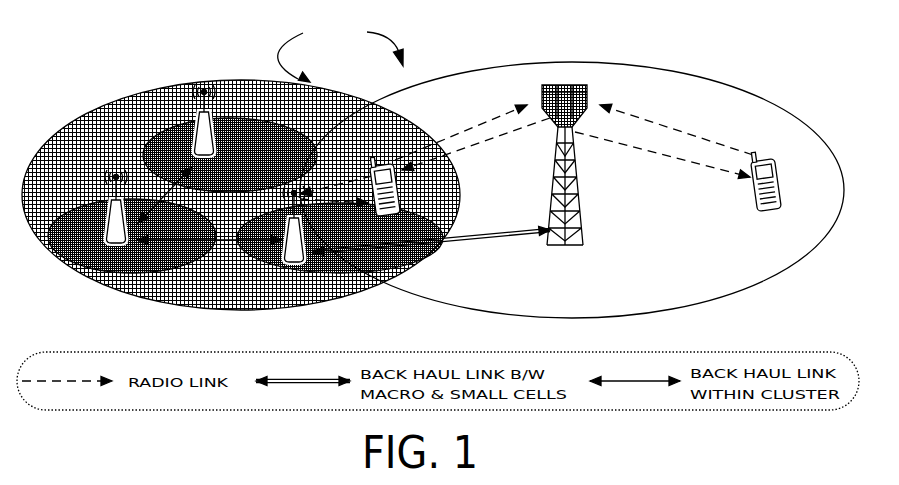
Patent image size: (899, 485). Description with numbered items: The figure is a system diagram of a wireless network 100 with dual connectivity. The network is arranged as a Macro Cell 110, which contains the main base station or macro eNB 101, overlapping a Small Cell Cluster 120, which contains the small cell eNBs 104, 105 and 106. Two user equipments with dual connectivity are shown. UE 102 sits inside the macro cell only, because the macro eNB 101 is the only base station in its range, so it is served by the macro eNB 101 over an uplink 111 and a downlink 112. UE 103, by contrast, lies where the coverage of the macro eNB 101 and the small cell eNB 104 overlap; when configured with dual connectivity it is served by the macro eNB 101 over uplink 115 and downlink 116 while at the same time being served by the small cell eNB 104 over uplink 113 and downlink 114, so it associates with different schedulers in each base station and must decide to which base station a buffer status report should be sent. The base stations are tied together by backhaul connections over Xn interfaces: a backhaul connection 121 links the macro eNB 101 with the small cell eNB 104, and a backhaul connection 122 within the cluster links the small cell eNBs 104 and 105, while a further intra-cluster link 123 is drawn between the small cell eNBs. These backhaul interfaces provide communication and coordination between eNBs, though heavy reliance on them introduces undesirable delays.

The wireless network 100 is at (340, 52).
The macro eNB 101 is at (582, 86).
The UE with dual connectivity 102 is at (760, 158).
The UE with dual connectivity 103 is at (377, 165).
The small cell eNB 104 is at (287, 194).
The small cell eNB 105 is at (113, 194).
The small cell eNB 106 is at (216, 94).
The macro cell 110 is at (615, 335).
The uplink 111 is at (686, 136).
The downlink 112 is at (675, 164).
The uplink 113 is at (348, 216).
The downlink 114 is at (346, 194).
The uplink 115 is at (475, 138).
The downlink 116 is at (488, 154).
The small cell cluster 120 is at (259, 333).
The backhaul connection 121 is at (448, 248).
The backhaul connection 122 is at (225, 248).
The back haul link within cluster 123 is at (183, 202).